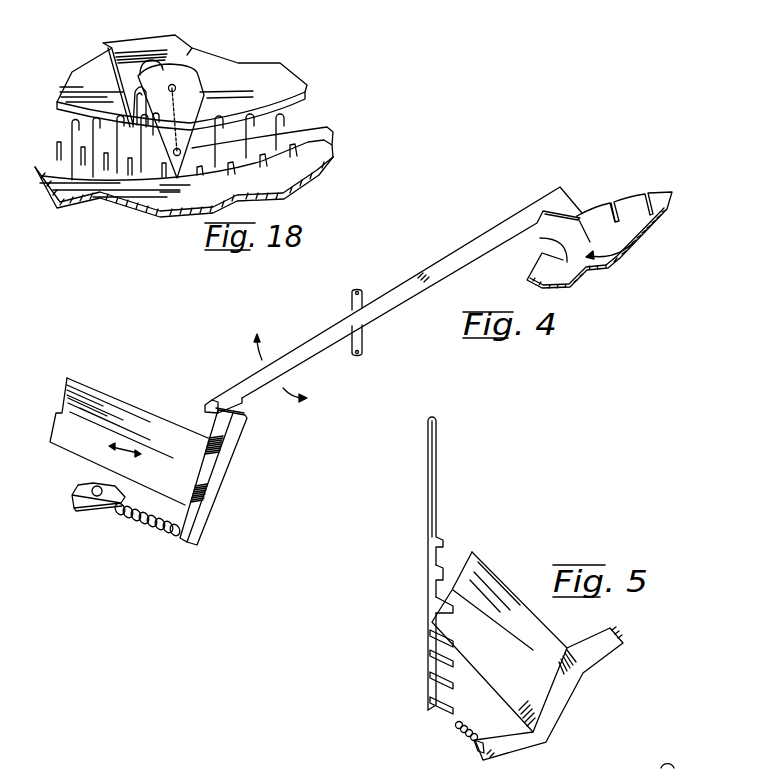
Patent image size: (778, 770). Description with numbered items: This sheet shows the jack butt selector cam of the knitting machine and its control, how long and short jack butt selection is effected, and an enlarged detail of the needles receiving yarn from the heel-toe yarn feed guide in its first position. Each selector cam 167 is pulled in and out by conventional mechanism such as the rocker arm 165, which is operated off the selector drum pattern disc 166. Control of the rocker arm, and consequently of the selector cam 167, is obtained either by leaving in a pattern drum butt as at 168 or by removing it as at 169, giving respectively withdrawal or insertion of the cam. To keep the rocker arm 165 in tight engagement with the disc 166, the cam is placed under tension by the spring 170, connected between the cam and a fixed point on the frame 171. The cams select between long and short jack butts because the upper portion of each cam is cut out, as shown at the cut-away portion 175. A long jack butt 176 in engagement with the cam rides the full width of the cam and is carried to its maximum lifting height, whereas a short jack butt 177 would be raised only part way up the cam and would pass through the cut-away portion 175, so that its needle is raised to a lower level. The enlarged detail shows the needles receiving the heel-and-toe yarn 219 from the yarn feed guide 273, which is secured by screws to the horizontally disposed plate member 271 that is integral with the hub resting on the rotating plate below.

In FIG. 4, the rocker arm 165 is at (479, 233).
In FIG. 4, the selector drum pattern disc 166 is at (652, 246).
In FIG. 4, the selector cam 167 is at (218, 476).
In FIG. 4, the pattern drum butt 168 is at (617, 199).
In FIG. 4, the removed pattern drum butt 169 is at (538, 241).
In FIG. 4, the spring 170 is at (148, 530).
In FIG. 4, the fixed point on the frame 171 is at (96, 510).
In FIG. 4, the cut-away portion 175 is at (58, 413).
In FIG. 5, the cut-away portion 175 is at (452, 587).
In FIG. 5, the long jack butt 176 is at (438, 605).
In FIG. 5, the short jack butt 177 is at (438, 573).
In FIG. 18, the yarn 219 is at (310, 129).
In FIG. 18, the plate member 271 is at (283, 76).
In FIG. 18, the yarn feed guide 273 is at (175, 37).